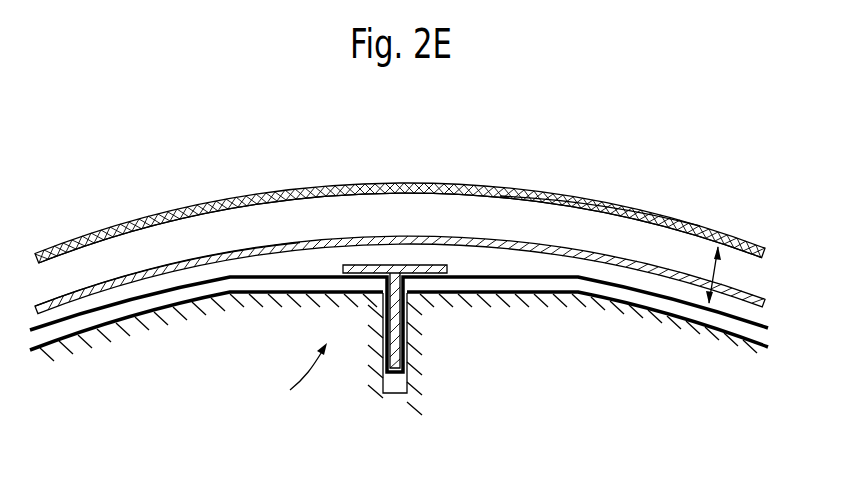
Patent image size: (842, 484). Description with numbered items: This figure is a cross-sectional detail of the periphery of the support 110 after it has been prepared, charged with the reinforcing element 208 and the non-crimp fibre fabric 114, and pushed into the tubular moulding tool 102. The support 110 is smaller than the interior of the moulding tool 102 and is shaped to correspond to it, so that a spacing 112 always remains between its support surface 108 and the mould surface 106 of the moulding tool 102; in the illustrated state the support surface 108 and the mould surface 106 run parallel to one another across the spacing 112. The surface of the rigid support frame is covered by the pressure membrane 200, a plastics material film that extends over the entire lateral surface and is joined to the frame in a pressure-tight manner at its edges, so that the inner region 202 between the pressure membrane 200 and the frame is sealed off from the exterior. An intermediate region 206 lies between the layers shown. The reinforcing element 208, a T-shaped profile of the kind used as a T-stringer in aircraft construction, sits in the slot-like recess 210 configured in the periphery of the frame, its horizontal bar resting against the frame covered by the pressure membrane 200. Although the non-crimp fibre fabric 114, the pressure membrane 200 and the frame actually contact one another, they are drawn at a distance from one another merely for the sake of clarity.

The moulding tool 102 is at (537, 192).
The mould surface 106 is at (482, 197).
The support surface 108 is at (633, 287).
The support 110 is at (301, 383).
The spacing 112 is at (713, 277).
The non-crimp fibre fabric 114 is at (112, 285).
The pressure membrane 200 is at (272, 280).
The inner region 202 is at (550, 282).
The intermediate region 206 is at (592, 223).
The reinforcing element 208 is at (397, 345).
The recess 210 is at (398, 385).